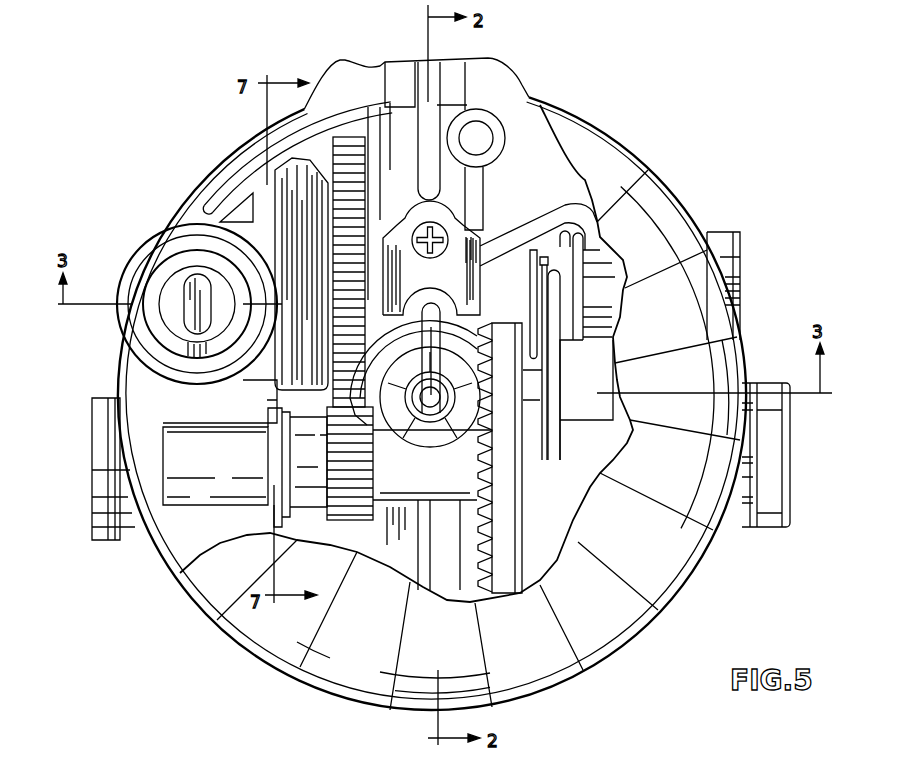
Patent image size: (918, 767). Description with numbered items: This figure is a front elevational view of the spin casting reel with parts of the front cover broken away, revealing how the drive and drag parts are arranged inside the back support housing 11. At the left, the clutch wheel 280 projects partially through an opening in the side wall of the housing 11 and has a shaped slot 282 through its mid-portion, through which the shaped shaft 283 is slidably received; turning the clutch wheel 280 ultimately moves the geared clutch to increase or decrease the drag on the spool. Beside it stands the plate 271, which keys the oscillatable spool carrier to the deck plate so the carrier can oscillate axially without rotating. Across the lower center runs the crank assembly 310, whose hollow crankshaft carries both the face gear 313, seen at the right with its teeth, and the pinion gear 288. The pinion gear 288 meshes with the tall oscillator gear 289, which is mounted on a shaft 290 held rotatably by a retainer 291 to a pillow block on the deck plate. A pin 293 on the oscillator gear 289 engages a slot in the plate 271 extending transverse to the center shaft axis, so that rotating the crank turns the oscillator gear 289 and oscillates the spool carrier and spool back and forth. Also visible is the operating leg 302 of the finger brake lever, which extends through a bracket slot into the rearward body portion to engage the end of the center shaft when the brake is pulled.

The back support housing 11 is at (607, 633).
The plate 271 is at (293, 193).
The clutch wheel 280 is at (163, 247).
The shaped slot 282 is at (185, 295).
The shaped shaft 283 is at (192, 318).
The pinion gear 288 is at (360, 513).
The oscillator gear 289 is at (358, 150).
The shaft 290 is at (377, 273).
The retainer 291 is at (492, 232).
The pin 293 is at (442, 227).
The operating leg 302 is at (432, 318).
The crank assembly 310 is at (447, 474).
The face gear 313 is at (503, 588).